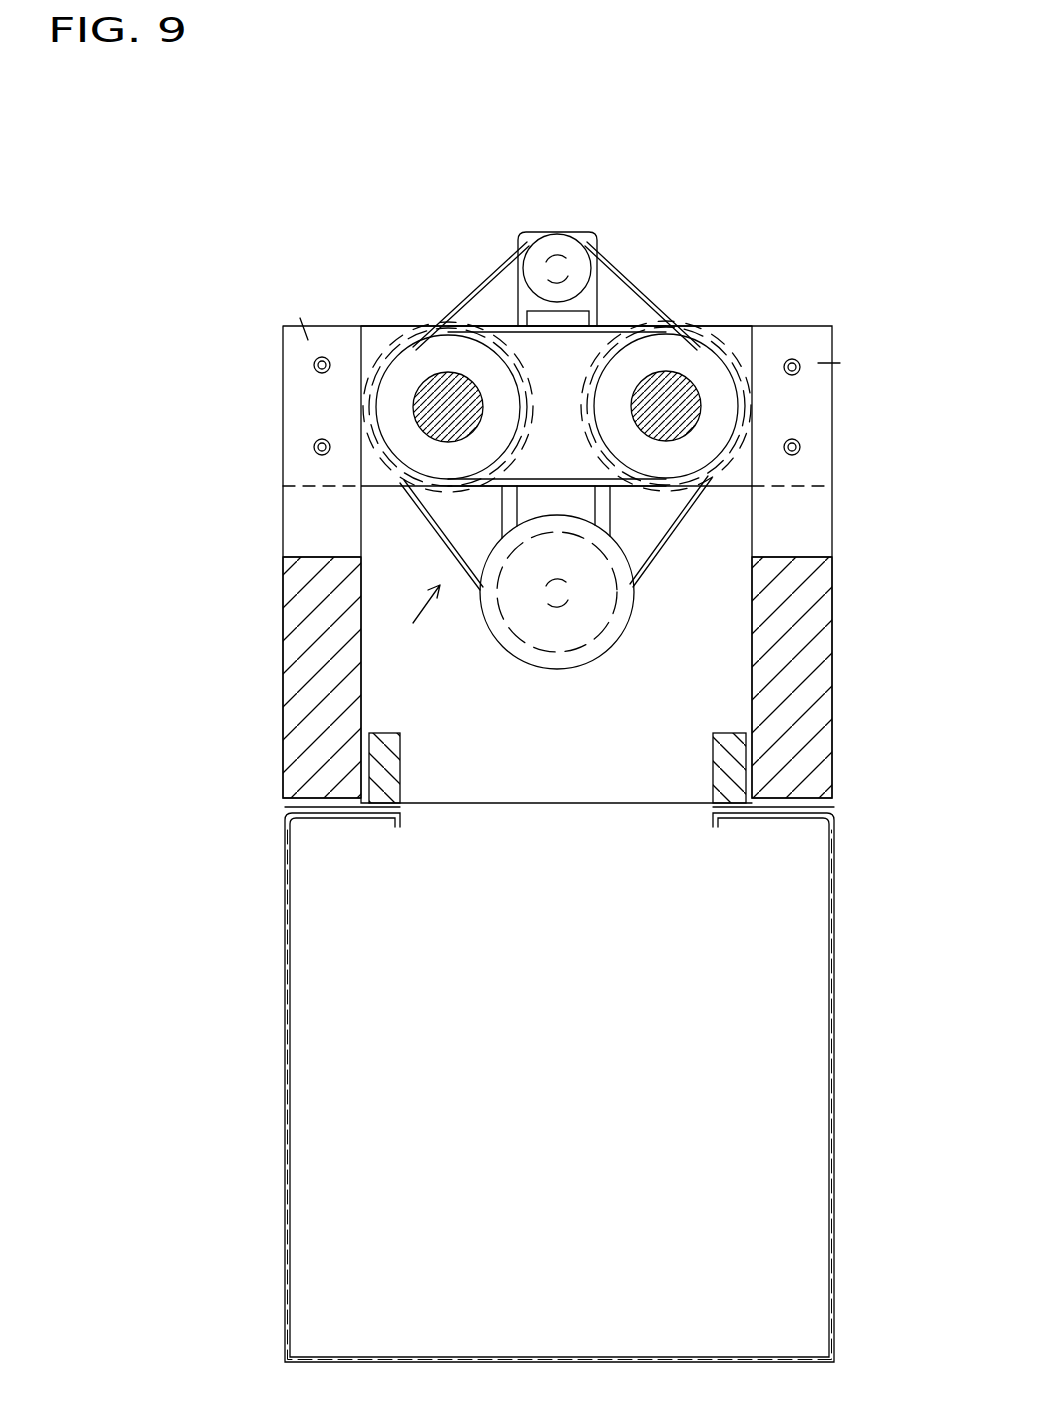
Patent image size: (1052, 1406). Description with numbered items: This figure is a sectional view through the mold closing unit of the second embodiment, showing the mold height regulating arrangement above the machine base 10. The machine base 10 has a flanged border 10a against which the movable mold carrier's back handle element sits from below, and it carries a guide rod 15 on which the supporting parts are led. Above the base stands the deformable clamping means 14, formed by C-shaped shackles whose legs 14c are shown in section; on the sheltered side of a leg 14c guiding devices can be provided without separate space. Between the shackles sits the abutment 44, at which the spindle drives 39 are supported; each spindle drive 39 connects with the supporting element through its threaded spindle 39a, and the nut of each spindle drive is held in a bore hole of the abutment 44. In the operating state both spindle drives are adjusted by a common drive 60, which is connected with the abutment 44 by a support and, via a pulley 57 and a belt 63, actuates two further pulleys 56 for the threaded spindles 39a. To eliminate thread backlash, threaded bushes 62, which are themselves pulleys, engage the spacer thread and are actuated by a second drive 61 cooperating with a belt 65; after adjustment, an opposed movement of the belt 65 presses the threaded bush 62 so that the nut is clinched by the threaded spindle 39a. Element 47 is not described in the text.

The machine base 10 is at (498, 983).
The flanged border 10a is at (348, 808).
The clamping means 14 is at (310, 527).
The leg 14c is at (320, 690).
The guide rod 15 is at (372, 770).
The spindle drive 39 is at (411, 628).
The threaded spindle 39a is at (445, 410).
The abutment 44 is at (562, 390).
The fastener 47 is at (290, 297).
The pulley 56 is at (452, 290).
The pulley 57 is at (600, 672).
The common drive 60 is at (543, 660).
The second drive 61 is at (530, 245).
The threaded bush 62 is at (427, 360).
The belt 63 is at (605, 325).
The belt 65 is at (608, 323).